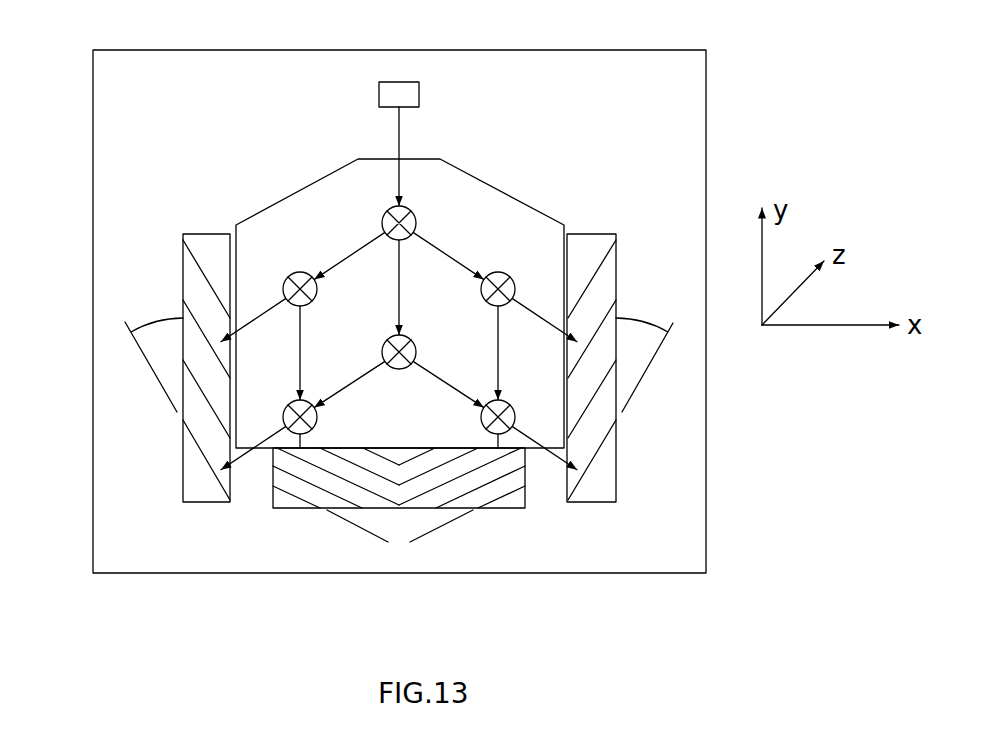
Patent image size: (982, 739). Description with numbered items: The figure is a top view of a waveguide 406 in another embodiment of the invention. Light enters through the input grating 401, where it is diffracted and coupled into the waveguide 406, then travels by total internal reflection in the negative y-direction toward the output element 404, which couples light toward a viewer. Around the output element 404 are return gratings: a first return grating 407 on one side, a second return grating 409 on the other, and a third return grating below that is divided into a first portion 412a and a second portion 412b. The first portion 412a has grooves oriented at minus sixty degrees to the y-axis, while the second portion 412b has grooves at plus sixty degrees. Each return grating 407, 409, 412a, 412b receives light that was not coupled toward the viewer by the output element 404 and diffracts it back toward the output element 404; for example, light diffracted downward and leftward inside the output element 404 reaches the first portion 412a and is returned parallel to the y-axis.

The input grating 401 is at (379, 101).
The output element 404 is at (423, 155).
The waveguide 406 is at (672, 83).
The first return grating 407 is at (193, 450).
The second return grating 409 is at (598, 468).
The first portion of the third return grating 412a is at (290, 497).
The second portion of the third return grating 412b is at (487, 493).